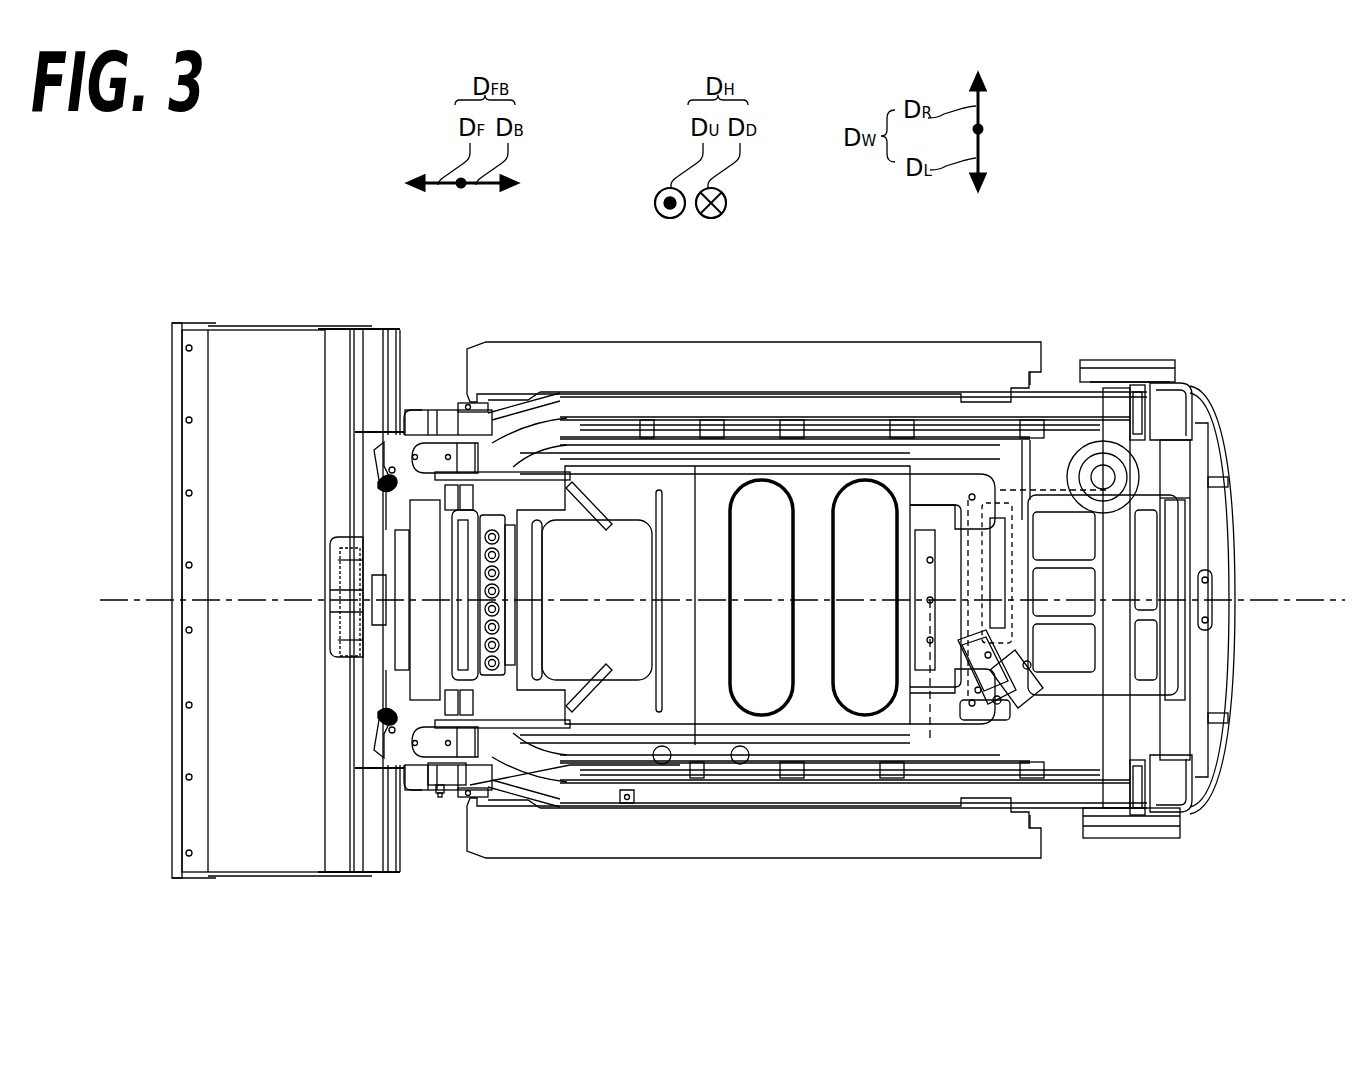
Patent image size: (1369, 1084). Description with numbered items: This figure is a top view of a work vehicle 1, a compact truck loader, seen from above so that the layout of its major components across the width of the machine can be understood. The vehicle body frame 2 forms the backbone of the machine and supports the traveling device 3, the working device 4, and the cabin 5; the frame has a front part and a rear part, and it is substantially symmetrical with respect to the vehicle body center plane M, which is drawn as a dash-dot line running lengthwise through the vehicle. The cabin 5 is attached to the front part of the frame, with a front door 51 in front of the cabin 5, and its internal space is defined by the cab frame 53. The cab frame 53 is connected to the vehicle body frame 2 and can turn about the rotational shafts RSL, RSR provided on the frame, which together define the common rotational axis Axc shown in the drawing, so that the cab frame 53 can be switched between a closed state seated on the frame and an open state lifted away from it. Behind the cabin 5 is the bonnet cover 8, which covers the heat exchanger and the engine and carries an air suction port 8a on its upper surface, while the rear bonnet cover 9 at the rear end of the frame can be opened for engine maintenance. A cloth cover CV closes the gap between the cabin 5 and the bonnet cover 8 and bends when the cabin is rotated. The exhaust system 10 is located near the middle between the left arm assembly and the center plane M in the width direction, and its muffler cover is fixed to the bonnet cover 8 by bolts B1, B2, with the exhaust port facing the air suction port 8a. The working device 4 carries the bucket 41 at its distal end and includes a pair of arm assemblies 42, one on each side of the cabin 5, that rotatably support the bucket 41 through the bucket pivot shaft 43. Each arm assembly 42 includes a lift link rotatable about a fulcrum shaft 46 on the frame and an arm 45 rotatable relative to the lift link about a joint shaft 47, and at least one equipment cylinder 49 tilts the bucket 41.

The work vehicle 1 is at (250, 206).
The vehicle body frame 2 is at (498, 402).
The traveling device 3 is at (813, 344).
The working device 4 is at (330, 242).
The cabin 5 is at (714, 500).
The bonnet cover 8 is at (1046, 478).
The air suction port 8a is at (1062, 520).
The rear bonnet cover 9 is at (1230, 508).
The exhaust system 10 is at (1014, 686).
The bucket 41 is at (254, 314).
The arm assembly 42 is at (765, 400).
The bucket pivot shaft 43 is at (438, 793).
The arm 45 is at (1148, 412).
The fulcrum shaft 46 is at (1117, 420).
The joint shaft 47 is at (1190, 446).
The equipment cylinder 49 is at (392, 477).
The front door 51 is at (505, 657).
The cab frame 53 is at (752, 462).
The vehicle body center plane M is at (172, 600).
The rotational shaft RSR is at (956, 560).
The rotational shaft RSL is at (967, 738).
The cover CV is at (1002, 464).
The common rotational axis Axc is at (932, 742).
The bolt B1 is at (996, 700).
The bolt B2 is at (1028, 666).